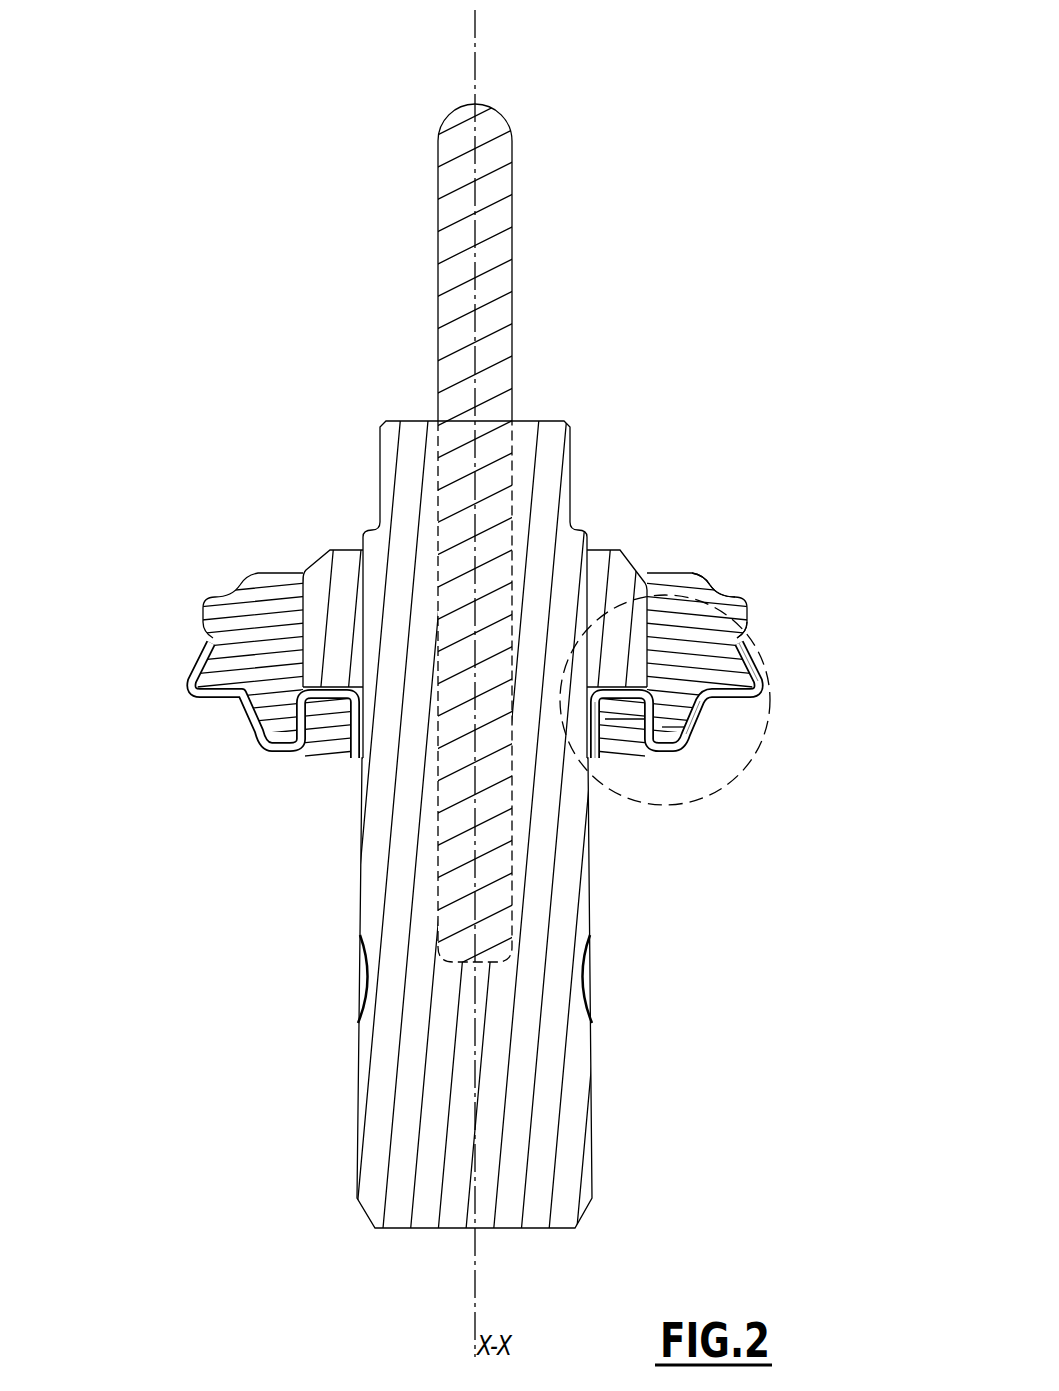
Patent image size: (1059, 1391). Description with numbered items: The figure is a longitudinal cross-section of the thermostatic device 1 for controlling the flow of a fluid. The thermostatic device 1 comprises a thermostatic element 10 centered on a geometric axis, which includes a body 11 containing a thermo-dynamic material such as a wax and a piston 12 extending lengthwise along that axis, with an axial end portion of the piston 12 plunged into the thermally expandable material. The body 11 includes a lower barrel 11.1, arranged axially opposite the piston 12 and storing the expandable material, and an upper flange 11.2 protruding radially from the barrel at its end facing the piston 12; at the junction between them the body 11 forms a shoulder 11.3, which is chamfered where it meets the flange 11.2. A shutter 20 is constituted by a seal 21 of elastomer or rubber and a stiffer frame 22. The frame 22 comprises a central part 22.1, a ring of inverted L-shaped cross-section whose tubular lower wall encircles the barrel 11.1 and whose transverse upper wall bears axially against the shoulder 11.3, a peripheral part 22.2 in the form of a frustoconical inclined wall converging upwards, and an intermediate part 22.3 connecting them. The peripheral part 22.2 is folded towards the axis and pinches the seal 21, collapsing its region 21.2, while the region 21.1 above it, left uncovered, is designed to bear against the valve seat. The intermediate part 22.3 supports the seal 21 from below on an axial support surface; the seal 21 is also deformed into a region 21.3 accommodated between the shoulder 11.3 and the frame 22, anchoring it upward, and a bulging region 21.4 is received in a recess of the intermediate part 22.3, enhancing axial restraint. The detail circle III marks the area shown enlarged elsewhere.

The thermostatic device 1 is at (610, 127).
The thermostatic element 10 is at (167, 240).
The body 11 is at (378, 457).
The lower barrel 11.1 is at (357, 1093).
The upper flange 11.2 is at (320, 638).
The shoulder 11.3 is at (330, 705).
The piston 12 is at (435, 180).
The shutter 20 is at (53, 592).
The seal 21 is at (203, 602).
The region of the seal 21.1 is at (747, 608).
The collapsed region of the seal 21.2 is at (692, 677).
The region of the seal 21.3 is at (623, 740).
The bulging region of the seal 21.4 is at (683, 716).
The frame 22 is at (187, 692).
The central part 22.1 is at (590, 773).
The peripheral part 22.2 is at (747, 647).
The intermediate part 22.3 is at (690, 740).
The detail circle III is at (743, 773).